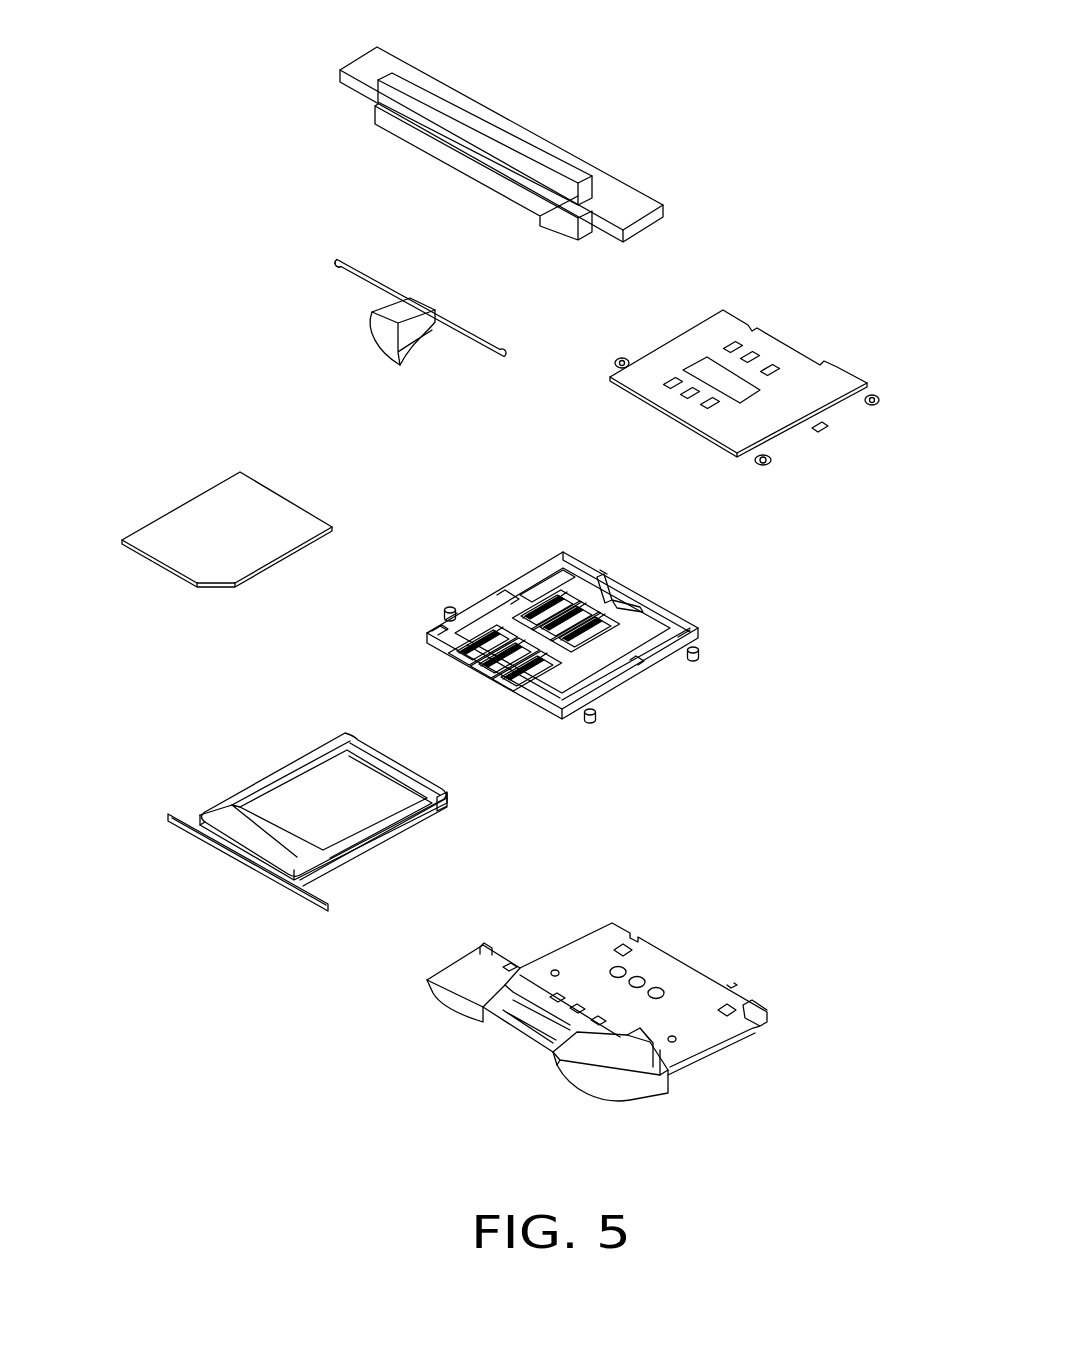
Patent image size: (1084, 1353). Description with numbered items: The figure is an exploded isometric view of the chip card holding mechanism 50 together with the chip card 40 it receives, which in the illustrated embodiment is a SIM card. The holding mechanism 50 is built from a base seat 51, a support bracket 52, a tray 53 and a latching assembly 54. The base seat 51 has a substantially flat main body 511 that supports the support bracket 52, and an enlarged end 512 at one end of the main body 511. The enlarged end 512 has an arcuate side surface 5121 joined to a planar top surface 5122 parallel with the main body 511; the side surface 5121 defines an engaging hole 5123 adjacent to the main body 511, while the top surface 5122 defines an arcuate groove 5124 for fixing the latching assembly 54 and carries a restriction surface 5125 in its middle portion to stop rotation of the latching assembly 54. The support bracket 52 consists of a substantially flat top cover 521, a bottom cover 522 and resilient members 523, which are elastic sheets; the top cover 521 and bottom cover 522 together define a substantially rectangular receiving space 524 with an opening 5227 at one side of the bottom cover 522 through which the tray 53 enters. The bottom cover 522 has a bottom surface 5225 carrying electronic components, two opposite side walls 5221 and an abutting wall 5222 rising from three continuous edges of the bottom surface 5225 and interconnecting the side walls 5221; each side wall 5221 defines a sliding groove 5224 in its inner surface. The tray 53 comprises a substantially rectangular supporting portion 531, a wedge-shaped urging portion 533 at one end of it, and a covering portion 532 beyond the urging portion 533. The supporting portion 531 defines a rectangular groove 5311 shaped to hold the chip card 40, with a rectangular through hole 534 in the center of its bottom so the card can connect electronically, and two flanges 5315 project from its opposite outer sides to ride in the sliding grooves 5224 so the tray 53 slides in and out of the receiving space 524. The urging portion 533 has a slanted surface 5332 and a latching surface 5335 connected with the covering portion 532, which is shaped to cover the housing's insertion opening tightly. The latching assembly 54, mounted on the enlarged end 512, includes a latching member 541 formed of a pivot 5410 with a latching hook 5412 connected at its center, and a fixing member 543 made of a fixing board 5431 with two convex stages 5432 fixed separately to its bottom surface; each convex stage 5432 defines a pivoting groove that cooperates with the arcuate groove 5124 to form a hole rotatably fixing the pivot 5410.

The chip card 40 is at (210, 508).
The chip card holding mechanism 50 is at (720, 80).
The base seat 51 is at (650, 922).
The main body 511 is at (693, 997).
The enlarged end 512 is at (447, 982).
The arcuate side surface 5121 is at (577, 1073).
The planar top surface 5122 is at (612, 1053).
The engaging hole 5123 is at (508, 1027).
The arcuate groove 5124 is at (657, 1060).
The restriction surface 5125 is at (538, 1003).
The support bracket 52 is at (833, 493).
The top cover 521 is at (777, 420).
The bottom cover 522 is at (690, 597).
The resilient member 523 is at (633, 590).
The receiving space 524 is at (557, 590).
The side walls 5221 is at (653, 662).
The abutting wall 5222 is at (660, 617).
The sliding groove 5224 is at (433, 637).
The bottom surface 5225 is at (600, 647).
The opening 5227 is at (527, 687).
The tray 53 is at (377, 735).
The supporting portion 531 is at (376, 777).
The rectangular groove 5311 is at (420, 797).
The flanges 5315 is at (360, 853).
The covering portion 532 is at (197, 840).
The urging portion 533 is at (203, 782).
The slanted surface 5332 is at (217, 817).
The latching surface 5335 is at (179, 791).
The rectangular through hole 534 is at (307, 797).
The latching assembly 54 is at (165, 108).
The latching member 541 is at (233, 223).
The pivot 5410 is at (340, 259).
The latching hook 5412 is at (382, 347).
The fixing member 543 is at (240, 85).
The fixing board 5431 is at (357, 83).
The convex stages 5432 is at (380, 123).